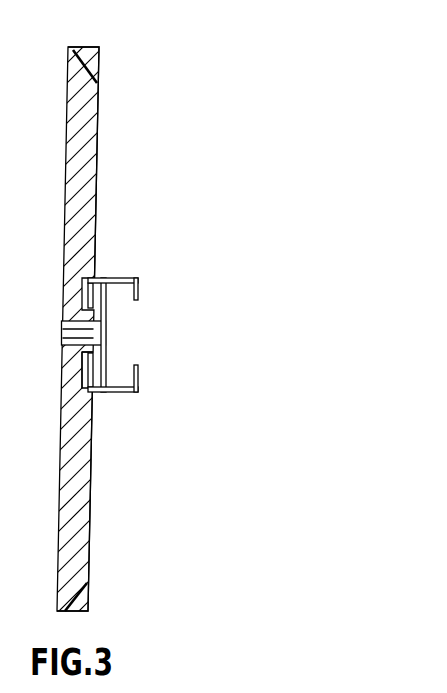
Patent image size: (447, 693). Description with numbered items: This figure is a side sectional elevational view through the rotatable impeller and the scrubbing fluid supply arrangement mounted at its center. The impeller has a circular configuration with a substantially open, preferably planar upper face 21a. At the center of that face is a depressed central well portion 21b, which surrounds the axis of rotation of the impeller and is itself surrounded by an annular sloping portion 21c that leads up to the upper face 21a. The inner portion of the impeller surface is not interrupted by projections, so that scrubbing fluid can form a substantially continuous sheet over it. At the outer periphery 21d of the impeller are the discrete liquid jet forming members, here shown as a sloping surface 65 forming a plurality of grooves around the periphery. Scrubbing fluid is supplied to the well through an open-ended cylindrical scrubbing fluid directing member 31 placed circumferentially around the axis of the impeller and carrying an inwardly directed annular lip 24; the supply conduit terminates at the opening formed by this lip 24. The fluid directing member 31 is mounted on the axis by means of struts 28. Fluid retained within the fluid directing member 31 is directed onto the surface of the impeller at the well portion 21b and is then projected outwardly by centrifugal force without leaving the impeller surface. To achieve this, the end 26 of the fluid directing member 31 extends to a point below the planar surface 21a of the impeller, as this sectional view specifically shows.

The upper face 21a is at (91, 477).
The central well portion 21b is at (90, 390).
The annular sloping portion 21c is at (86, 372).
The outer periphery 21d is at (82, 51).
The inwardly directed annular lip 24 is at (138, 288).
The end of fluid directing member 26 is at (95, 280).
The struts 28 is at (106, 365).
The scrubbing fluid directing member 31 is at (120, 279).
The sloping surface 65 is at (98, 73).